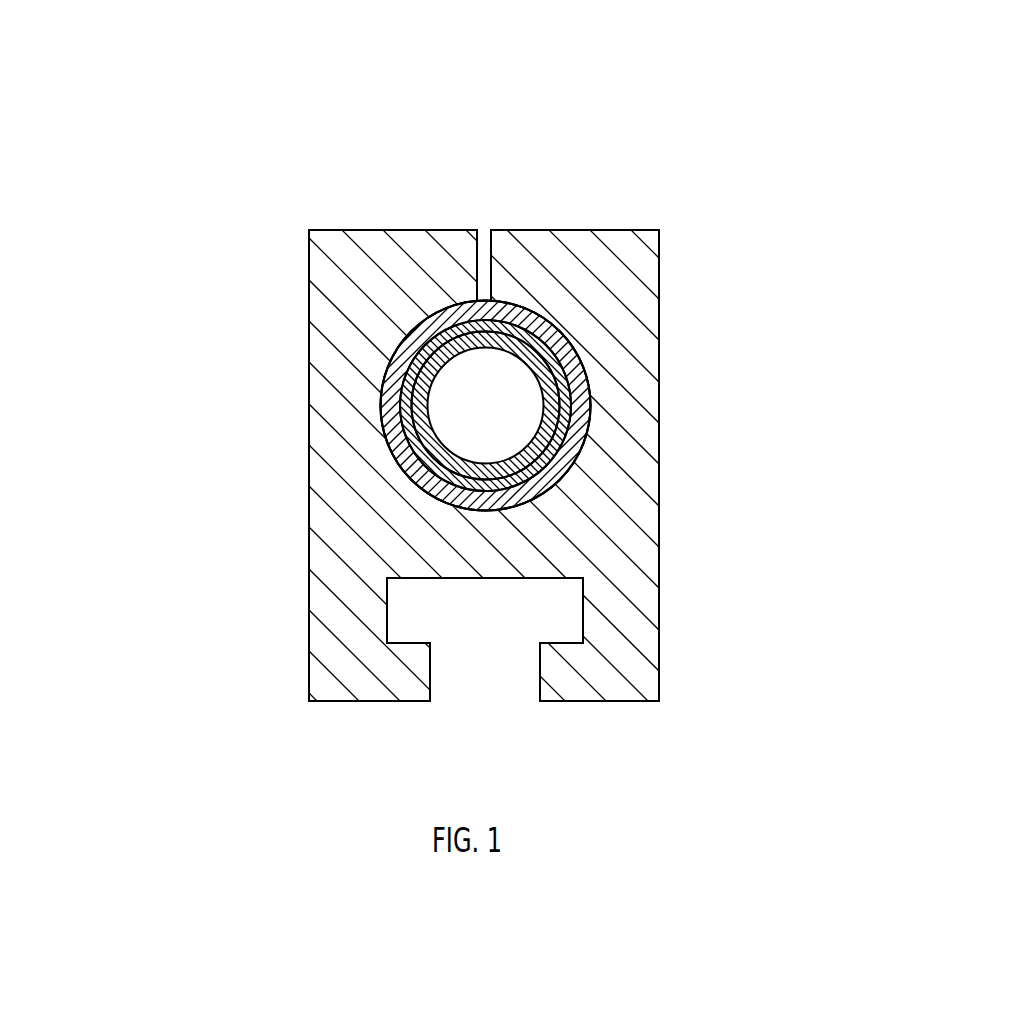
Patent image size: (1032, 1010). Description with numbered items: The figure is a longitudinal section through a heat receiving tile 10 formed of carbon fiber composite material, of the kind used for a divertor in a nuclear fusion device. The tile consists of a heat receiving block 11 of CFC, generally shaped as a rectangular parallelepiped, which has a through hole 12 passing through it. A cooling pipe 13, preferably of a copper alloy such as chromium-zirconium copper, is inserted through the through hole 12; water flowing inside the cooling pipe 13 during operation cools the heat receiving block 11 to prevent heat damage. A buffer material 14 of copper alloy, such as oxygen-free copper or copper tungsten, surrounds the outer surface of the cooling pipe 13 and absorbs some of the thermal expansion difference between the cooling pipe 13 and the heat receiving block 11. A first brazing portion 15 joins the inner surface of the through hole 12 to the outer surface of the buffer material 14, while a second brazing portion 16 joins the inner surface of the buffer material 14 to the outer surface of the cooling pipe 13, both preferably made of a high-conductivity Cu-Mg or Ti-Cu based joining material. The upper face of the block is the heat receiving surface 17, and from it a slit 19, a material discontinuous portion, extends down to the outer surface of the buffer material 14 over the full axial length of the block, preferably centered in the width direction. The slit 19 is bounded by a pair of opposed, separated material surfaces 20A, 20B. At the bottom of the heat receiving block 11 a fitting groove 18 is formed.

The heat receiving tile formed of carbon fiber composite material 10 is at (651, 89).
The heat receiving block 11 is at (362, 315).
The through hole 12 is at (387, 458).
The cooling pipe 13 is at (415, 412).
The buffer material 14 is at (390, 405).
The first brazing portion 15 is at (585, 375).
The second brazing portion 16 is at (563, 432).
The heat receiving surface 17 is at (322, 230).
The fitting groove 18 is at (481, 627).
The slit 19 is at (484, 278).
The material surface 20A is at (477, 236).
The material surface 20B is at (490, 236).